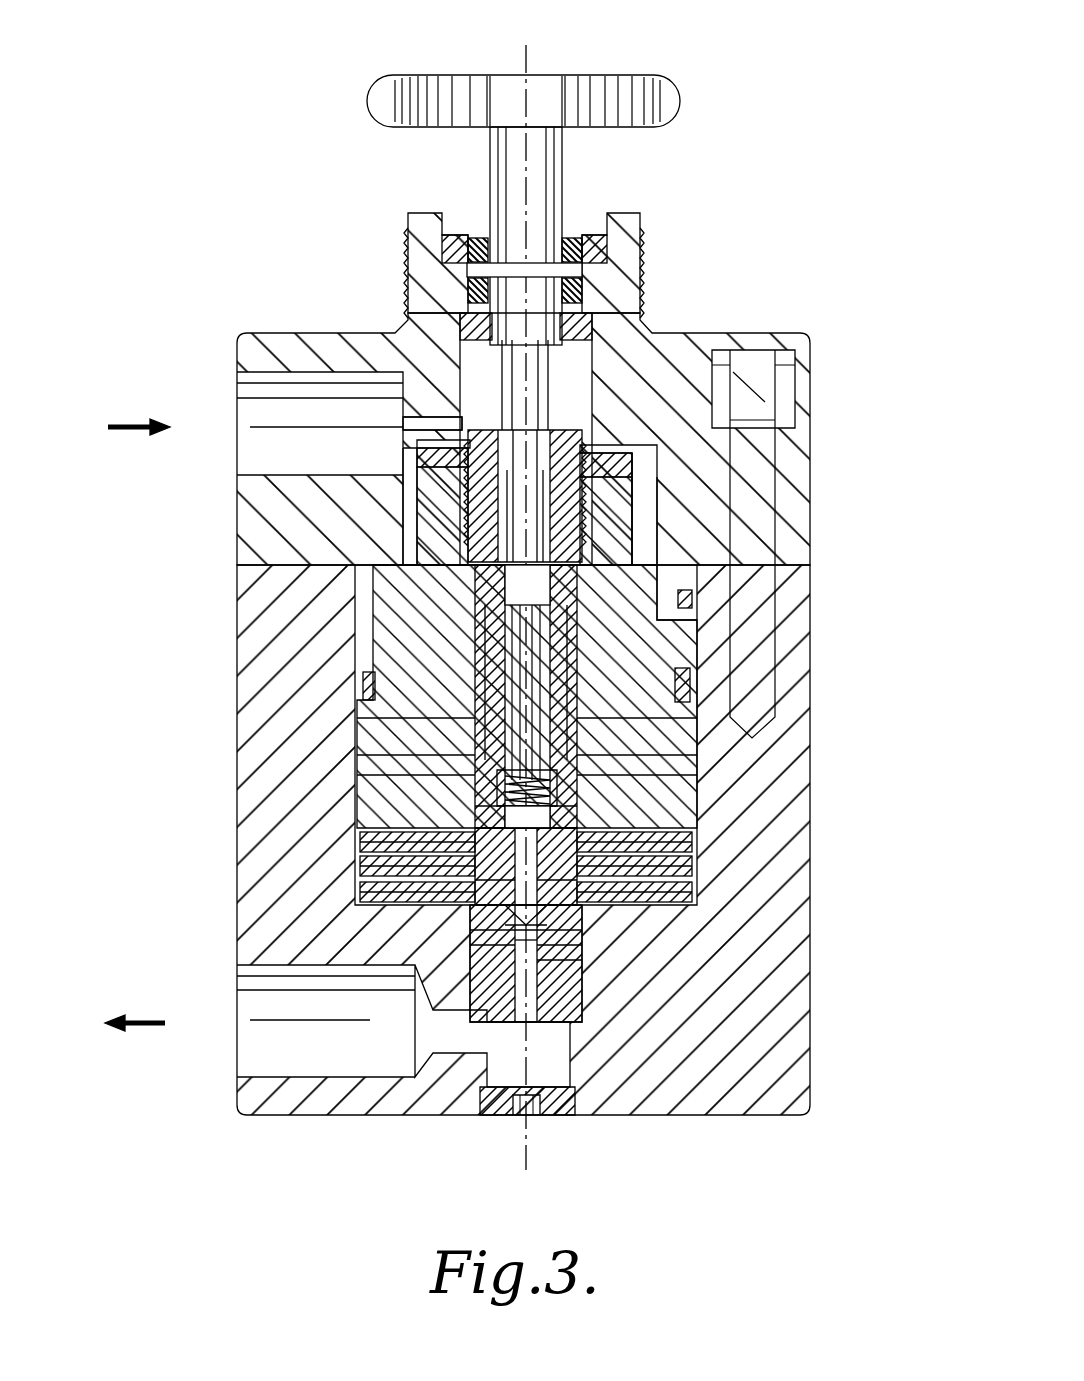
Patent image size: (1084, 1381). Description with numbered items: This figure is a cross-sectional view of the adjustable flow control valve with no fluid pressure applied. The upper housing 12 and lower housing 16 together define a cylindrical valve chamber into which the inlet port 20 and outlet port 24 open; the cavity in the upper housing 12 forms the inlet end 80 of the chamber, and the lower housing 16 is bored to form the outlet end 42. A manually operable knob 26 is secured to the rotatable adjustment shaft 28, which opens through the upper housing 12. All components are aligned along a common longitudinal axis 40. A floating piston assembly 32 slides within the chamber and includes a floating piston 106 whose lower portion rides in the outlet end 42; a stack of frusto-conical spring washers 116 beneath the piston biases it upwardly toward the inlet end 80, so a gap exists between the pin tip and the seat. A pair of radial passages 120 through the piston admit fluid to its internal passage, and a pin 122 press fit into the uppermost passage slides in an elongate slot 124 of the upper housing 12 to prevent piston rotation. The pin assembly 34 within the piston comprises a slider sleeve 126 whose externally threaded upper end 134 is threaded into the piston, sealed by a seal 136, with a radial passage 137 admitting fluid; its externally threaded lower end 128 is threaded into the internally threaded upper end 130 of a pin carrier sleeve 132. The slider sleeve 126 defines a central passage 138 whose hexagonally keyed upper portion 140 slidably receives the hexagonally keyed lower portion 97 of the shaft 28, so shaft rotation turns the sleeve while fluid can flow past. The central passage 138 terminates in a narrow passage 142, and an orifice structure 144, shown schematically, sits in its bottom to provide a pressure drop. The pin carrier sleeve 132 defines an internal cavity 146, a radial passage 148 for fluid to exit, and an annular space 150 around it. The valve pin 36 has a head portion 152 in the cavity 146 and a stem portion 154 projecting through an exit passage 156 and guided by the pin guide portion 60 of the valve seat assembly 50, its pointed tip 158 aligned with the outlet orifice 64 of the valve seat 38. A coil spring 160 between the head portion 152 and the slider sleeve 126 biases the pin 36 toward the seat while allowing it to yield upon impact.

The upper housing 12 is at (225, 484).
The lower housing 16 is at (225, 622).
The inlet port 20 is at (410, 425).
The outlet port 24 is at (452, 1042).
The knob 26 is at (690, 92).
The adjustment shaft 28 is at (575, 183).
The floating piston assembly 32 is at (695, 633).
The pin assembly 34 is at (455, 637).
The valve pin 36 is at (560, 855).
The valve seat 38 is at (478, 960).
The longitudinal axis 40 is at (537, 46).
The outlet end 42 is at (470, 874).
The valve seat assembly 50 is at (475, 998).
The pin guide portion 60 is at (470, 925).
The outlet orifice 64 is at (580, 957).
The inlet end 80 is at (432, 445).
The hexagonally keyed lower portion 97 is at (540, 375).
The floating piston 106 is at (365, 737).
The spring washers 116 is at (580, 903).
The radial passages 120 is at (560, 578).
The pin 122 is at (590, 492).
The elongate slot 124 is at (623, 558).
The slider sleeve 126 is at (577, 653).
The externally threaded lower end 128 is at (580, 780).
The internally threaded upper end 130 is at (577, 822).
The pin carrier sleeve 132 is at (575, 880).
The externally threaded upper end 134 is at (655, 530).
The seal 136 is at (577, 720).
The radial passage 137 is at (417, 533).
The central passage 138 is at (545, 580).
The hexagonally keyed upper portion 140 is at (560, 497).
The narrow passage 142 is at (577, 775).
The orifice structure 144 is at (577, 755).
The internal cavity 146 is at (560, 830).
The radial passage 148 is at (478, 812).
The annular space 150 is at (478, 834).
The head portion 152 is at (478, 855).
The stem portion 154 is at (478, 945).
The exit passage 156 is at (565, 925).
The pointed tip 158 is at (560, 940).
The coil spring 160 is at (500, 790).